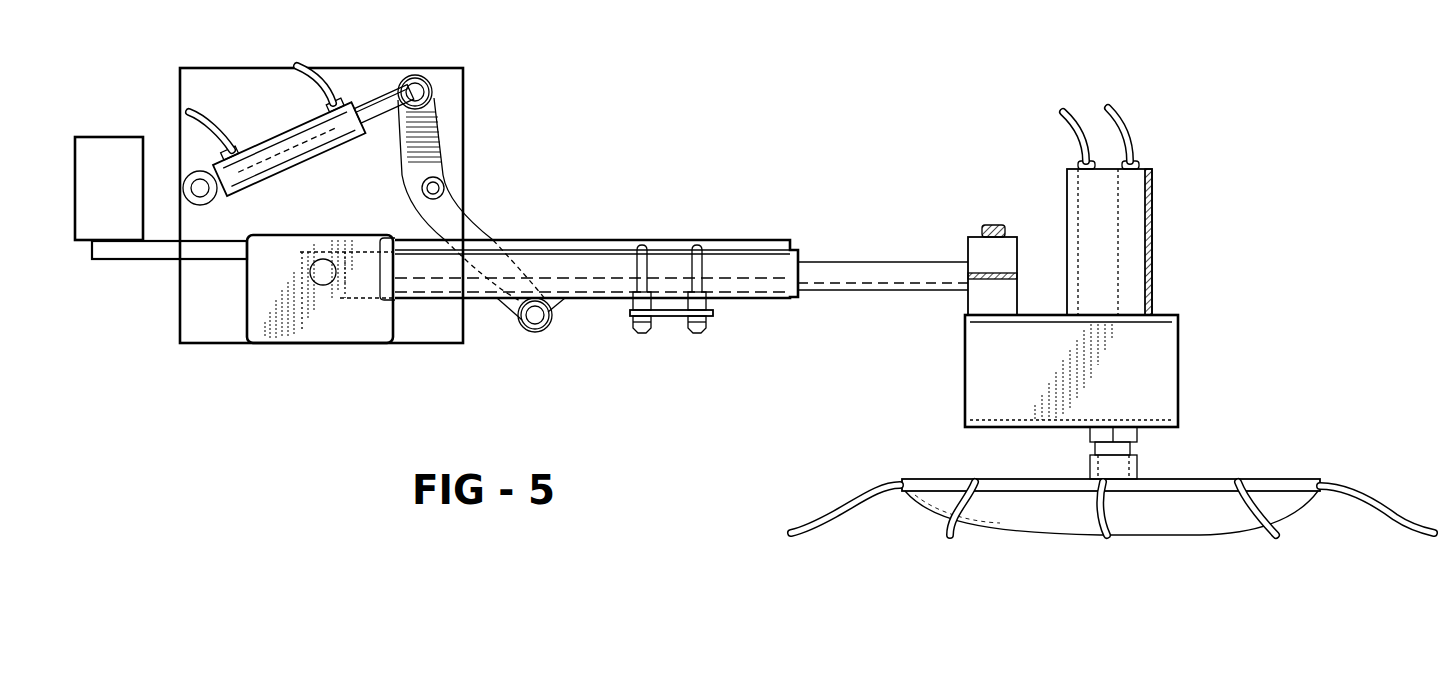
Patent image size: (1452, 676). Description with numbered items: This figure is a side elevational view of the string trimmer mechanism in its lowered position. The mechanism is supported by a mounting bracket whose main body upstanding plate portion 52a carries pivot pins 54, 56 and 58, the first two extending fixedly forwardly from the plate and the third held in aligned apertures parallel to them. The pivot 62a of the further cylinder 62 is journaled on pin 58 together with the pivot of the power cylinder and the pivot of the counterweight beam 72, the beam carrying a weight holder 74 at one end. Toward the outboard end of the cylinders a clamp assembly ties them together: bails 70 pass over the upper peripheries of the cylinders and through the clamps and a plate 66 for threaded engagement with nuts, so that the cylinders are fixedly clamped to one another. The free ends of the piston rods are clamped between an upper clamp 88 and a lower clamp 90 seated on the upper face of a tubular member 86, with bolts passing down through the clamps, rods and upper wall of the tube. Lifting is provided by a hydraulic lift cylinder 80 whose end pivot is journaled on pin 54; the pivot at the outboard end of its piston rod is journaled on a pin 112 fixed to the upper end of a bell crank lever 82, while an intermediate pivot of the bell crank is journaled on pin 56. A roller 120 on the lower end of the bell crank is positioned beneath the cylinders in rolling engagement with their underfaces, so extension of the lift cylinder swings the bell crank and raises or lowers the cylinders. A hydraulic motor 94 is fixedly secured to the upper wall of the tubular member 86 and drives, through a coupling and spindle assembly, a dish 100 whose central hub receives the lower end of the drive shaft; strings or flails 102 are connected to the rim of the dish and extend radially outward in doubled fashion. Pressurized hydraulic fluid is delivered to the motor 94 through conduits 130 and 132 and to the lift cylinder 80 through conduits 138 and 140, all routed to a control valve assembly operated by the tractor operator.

The weight holder 74 is at (103, 147).
The conduit 140 is at (228, 128).
The conduit 138 is at (337, 85).
The pin 112 is at (422, 92).
The bell crank lever 82 is at (452, 138).
The hydraulic lift cylinder 80 is at (287, 140).
The pivot pin 56 is at (445, 188).
The main body upstanding plate portion 52a is at (352, 199).
The pivot pin 54 is at (195, 207).
The pivot pin 58 is at (323, 285).
The further cylinder 62 is at (588, 290).
The pivot 62a is at (883, 276).
The roller 120 is at (540, 333).
The plate 66 is at (665, 316).
The beam 72 is at (642, 248).
The bails 70 is at (697, 248).
The upper clamp 88 is at (978, 236).
The lower clamp 90 is at (975, 303).
The tubular member 86 is at (1123, 377).
The hydraulic motor 94 is at (1135, 236).
The conduit 132 is at (1078, 128).
The conduit 130 is at (1120, 120).
The strings or flails 102 is at (842, 506).
The dish 100 is at (938, 520).